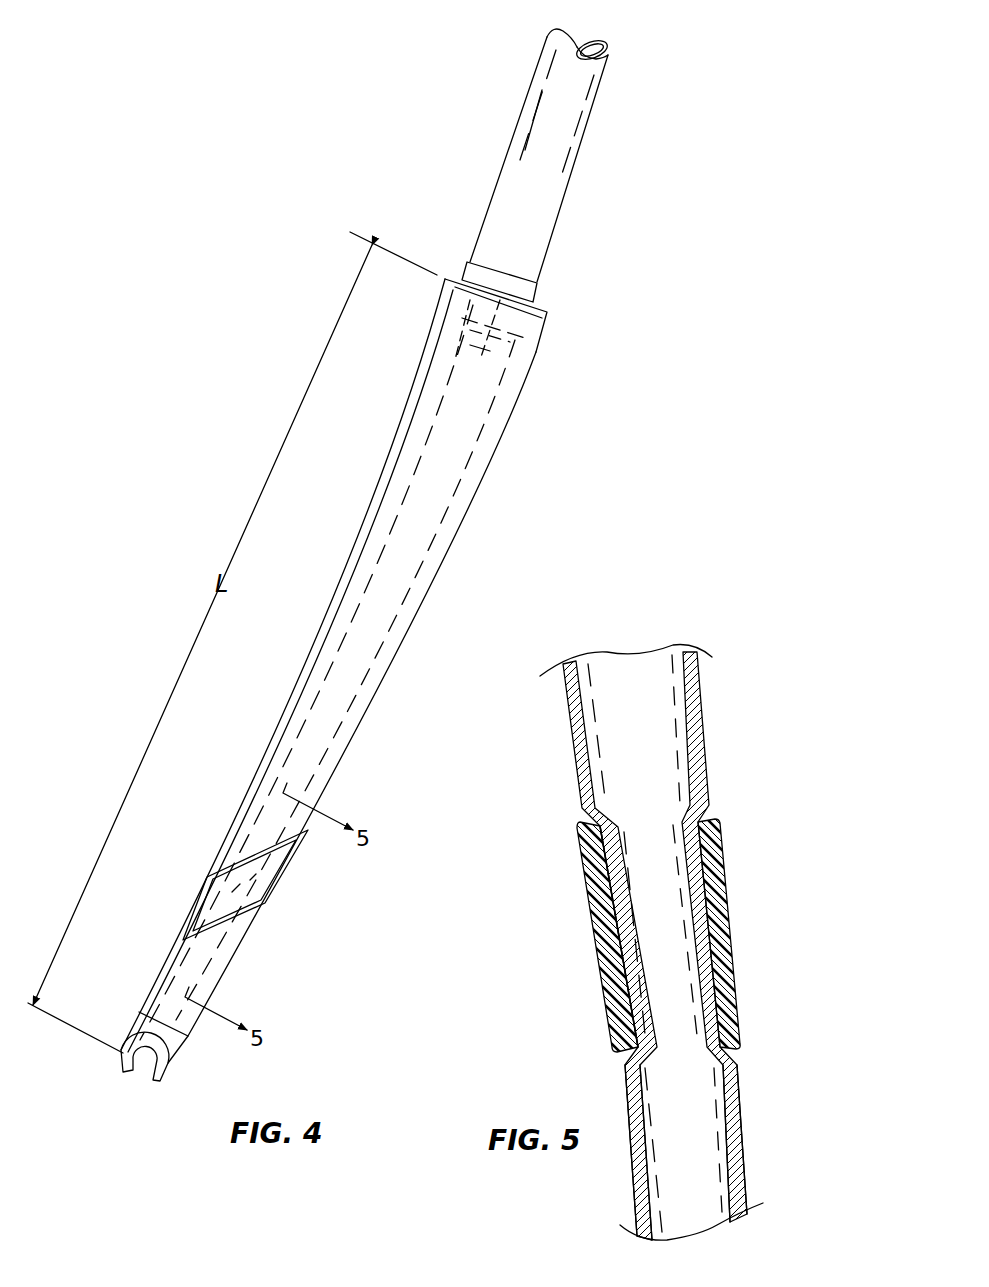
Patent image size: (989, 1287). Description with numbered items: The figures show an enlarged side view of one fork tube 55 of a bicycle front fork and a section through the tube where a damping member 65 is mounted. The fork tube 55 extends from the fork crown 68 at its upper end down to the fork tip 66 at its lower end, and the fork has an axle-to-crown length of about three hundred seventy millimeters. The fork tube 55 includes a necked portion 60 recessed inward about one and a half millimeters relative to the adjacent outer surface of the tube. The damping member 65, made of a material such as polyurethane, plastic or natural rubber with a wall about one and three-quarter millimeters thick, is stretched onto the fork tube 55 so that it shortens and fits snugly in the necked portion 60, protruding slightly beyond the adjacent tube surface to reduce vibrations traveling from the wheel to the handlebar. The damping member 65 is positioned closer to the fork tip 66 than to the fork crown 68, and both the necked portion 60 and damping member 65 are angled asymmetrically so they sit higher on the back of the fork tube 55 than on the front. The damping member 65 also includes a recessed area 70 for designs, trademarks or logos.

In FIG. 4, the fork tube 55 is at (467, 422).
In FIG. 5, the fork tube 55 is at (703, 757).
In FIG. 5, the necked portion 60 is at (717, 992).
In FIG. 4, the damping member 65 is at (310, 836).
In FIG. 5, the damping member 65 is at (600, 933).
In FIG. 4, the fork tip 66 is at (120, 1058).
In FIG. 4, the fork crown 68 is at (535, 330).
In FIG. 4, the recessed area 70 is at (217, 902).
In FIG. 5, the recessed area 70 is at (725, 890).